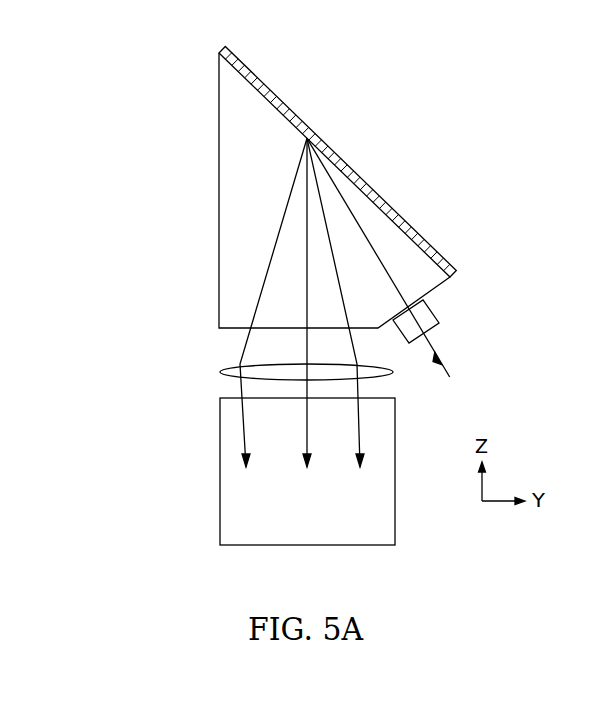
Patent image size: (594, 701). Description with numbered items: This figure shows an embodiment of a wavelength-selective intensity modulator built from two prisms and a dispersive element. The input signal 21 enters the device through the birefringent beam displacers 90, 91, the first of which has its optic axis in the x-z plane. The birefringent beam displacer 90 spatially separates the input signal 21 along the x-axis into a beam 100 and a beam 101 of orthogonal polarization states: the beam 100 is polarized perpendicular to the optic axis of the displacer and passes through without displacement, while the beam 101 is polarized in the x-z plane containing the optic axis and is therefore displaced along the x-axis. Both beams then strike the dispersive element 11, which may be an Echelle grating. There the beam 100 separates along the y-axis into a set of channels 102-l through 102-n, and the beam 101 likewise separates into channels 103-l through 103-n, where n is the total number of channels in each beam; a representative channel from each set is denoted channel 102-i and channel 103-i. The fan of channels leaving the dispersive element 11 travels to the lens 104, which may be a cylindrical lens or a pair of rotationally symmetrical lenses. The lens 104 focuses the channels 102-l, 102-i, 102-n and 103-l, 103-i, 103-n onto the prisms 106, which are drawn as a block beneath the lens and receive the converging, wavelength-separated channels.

The dispersive element 11 is at (279, 99).
The channel 102-l is at (185, 302).
The channel 103-l is at (291, 193).
The channel 102-i is at (187, 302).
The channel 103-i is at (307, 232).
The channel 102-n is at (208, 302).
The channel 103-n is at (337, 274).
The beam 100 is at (408, 265).
The beam 101 is at (380, 252).
The input signal 21 is at (438, 356).
The birefringent beam displacer 90 is at (467, 321).
The birefringent beam displacer 91 is at (438, 313).
The lens 104 is at (225, 371).
The prisms 106 is at (220, 448).